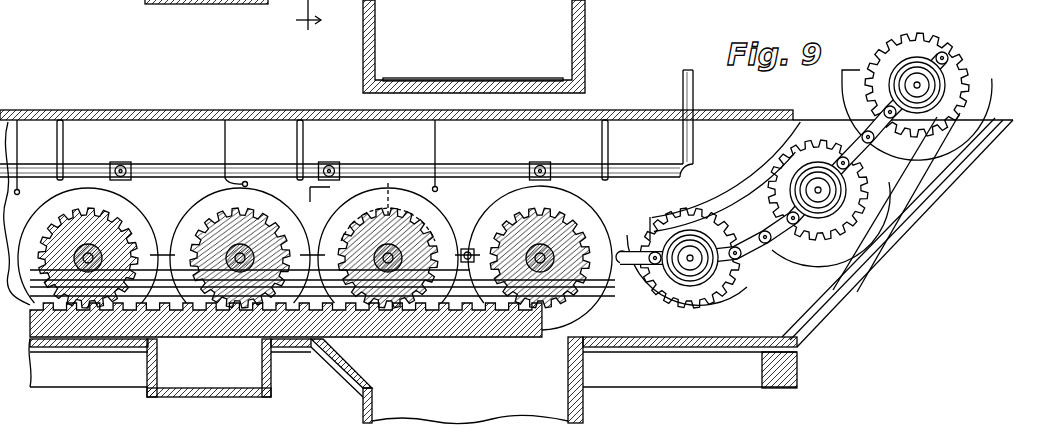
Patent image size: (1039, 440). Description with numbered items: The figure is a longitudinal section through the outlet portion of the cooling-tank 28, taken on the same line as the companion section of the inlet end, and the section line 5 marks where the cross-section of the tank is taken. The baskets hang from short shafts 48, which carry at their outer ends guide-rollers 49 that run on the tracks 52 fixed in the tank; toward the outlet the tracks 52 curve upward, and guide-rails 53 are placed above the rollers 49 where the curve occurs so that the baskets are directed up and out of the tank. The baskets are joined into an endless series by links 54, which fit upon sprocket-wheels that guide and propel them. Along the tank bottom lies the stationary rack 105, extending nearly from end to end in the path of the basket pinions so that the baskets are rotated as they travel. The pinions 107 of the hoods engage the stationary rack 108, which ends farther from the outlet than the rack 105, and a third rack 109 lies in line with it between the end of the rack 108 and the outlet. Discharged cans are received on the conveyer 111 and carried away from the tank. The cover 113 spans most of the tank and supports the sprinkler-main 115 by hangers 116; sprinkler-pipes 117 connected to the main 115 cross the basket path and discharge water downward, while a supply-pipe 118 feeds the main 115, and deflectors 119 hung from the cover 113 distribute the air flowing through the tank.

The section line 5 is at (308, 26).
The cooling-tank 28 is at (618, 0).
The shafts 48 is at (236, 268).
The guide-rollers 49 is at (917, 82).
The tracks 52 is at (615, 287).
The guide-rails 53 is at (731, 212).
The links 54 is at (470, 245).
The stationary rack 105 is at (453, 323).
The pinions 107 is at (388, 258).
The stationary rack 108 is at (388, 258).
The third rack 109 is at (88, 258).
The conveyer 111 is at (472, 78).
The top or cover 113 is at (372, 211).
The sprinkler-main 115 is at (442, 167).
The hangers 116 is at (300, 147).
The sprinkler-pipes 117 is at (542, 163).
The supply-pipe 118 is at (690, 97).
The deflectors 119 is at (230, 149).